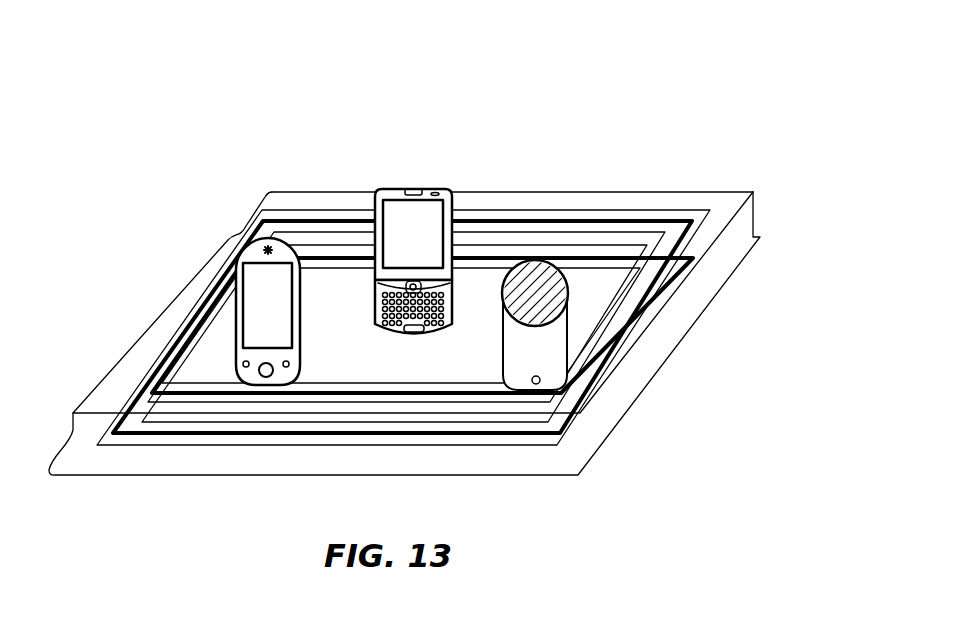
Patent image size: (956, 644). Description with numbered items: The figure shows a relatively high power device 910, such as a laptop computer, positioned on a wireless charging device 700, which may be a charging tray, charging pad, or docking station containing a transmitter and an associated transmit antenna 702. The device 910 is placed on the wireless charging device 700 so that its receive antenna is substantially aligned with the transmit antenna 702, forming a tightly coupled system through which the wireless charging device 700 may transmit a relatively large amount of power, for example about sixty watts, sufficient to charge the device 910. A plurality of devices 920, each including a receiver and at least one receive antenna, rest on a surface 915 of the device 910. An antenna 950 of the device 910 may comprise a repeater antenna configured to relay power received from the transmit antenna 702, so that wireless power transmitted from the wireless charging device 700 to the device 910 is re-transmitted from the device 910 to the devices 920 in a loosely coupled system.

The wireless charging device 700 is at (762, 240).
The transmit antenna 702 is at (678, 282).
The device 910 is at (742, 222).
The surface 915 is at (597, 283).
The devices 920 is at (243, 258).
The antenna 950 is at (532, 207).